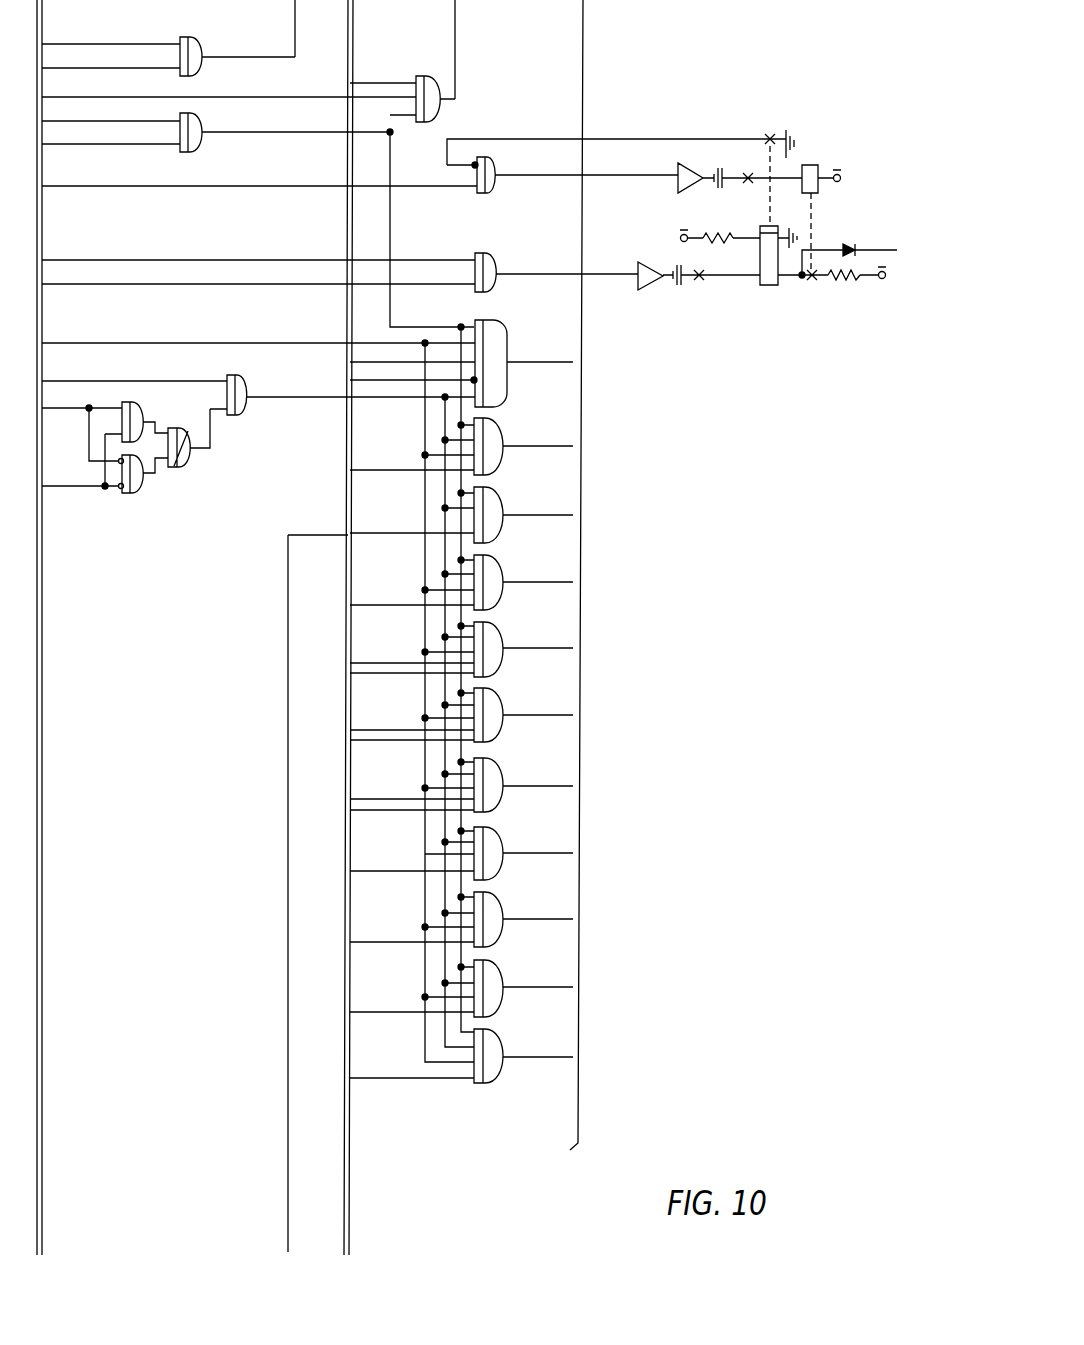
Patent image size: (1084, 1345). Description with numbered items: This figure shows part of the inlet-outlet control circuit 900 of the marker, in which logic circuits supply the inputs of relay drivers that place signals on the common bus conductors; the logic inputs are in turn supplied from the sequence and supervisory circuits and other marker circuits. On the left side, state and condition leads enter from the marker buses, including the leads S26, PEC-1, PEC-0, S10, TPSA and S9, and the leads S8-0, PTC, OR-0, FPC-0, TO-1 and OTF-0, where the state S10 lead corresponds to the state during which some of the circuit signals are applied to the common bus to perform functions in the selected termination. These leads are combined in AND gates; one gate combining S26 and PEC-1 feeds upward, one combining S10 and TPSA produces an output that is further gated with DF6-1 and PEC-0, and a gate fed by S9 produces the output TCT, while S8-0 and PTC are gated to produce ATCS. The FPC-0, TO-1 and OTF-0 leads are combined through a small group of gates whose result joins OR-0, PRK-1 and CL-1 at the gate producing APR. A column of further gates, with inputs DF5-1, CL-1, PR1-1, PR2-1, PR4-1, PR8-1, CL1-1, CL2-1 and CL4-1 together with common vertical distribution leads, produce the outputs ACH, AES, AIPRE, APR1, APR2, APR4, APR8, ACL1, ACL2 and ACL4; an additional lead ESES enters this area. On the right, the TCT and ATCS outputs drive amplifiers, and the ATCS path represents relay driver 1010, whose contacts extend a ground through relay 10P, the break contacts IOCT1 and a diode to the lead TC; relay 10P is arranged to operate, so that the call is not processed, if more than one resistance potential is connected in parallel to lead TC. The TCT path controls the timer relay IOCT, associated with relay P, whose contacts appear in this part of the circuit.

The S26 signal line S26 is at (87, 43).
The PEC-1 signal line and AND gate PEC-1 is at (102, 67).
The PEC-0 signal line PEC-0 is at (105, 96).
The state S10 is at (87, 120).
The TPSA signal line and AND gate TPSA is at (100, 143).
The S9 signal line S9 is at (77, 184).
The DF6-1 signal line and AND gate DF6-1 is at (410, 83).
The TCT gate and output TCT is at (560, 176).
The S8-0 signal line S8-0 is at (97, 257).
The PTC signal line PTC is at (89, 282).
The ATCS gate and output ATCS is at (573, 272).
The OR-0 signal line OR-0 is at (100, 341).
The FPC-0 signal line and AND gate FPC-0 is at (106, 381).
The TO-1 signal line and AND gate TO-1 is at (90, 409).
The OTF-0 signal line and gates OTF-0 is at (103, 484).
The APR gate and output APR is at (565, 361).
The PRK-1 signal line PRK-1 is at (413, 363).
The CL-1 signal lines CL-1 is at (402, 382).
The ACH gate and output ACH is at (567, 445).
The DF5-1 signal line DF5-1 is at (410, 469).
The AES gate and output AES is at (565, 514).
The ESES signal line ESES is at (331, 532).
The AIPRE gate and output AIPRE is at (575, 581).
The APR1 gate and output APR1 is at (569, 647).
The PR1-1 signal line PR1-1 is at (406, 676).
The APR2 gate and output APR2 is at (571, 714).
The PR2-1 signal line PR2-1 is at (408, 742).
The APR4 gate and output APR4 is at (571, 785).
The PR4-1 signal line PR4-1 is at (408, 812).
The APR8 gate and output APR8 is at (571, 852).
The PR8-1 signal line PR8-1 is at (409, 872).
The ACL1 gate and output ACL1 is at (567, 918).
The CL1-1 signal line CL1-1 is at (407, 940).
The ACL2 gate and output ACL2 is at (571, 986).
The CL2-1 signal line CL2-1 is at (411, 1010).
The ACL4 gate and output ACL4 is at (571, 1056).
The CL4-1 signal line CL4-1 is at (411, 1075).
The inlet-outlet control timer relay IOCT is at (809, 165).
The relay P is at (759, 227).
The break contacts 10CT1 IOCT1 is at (812, 250).
The lead TC is at (891, 247).
The relay driver 1010 is at (642, 264).
The relay 10P is at (765, 286).
The inlet-outlet control circuit 900 is at (762, 766).